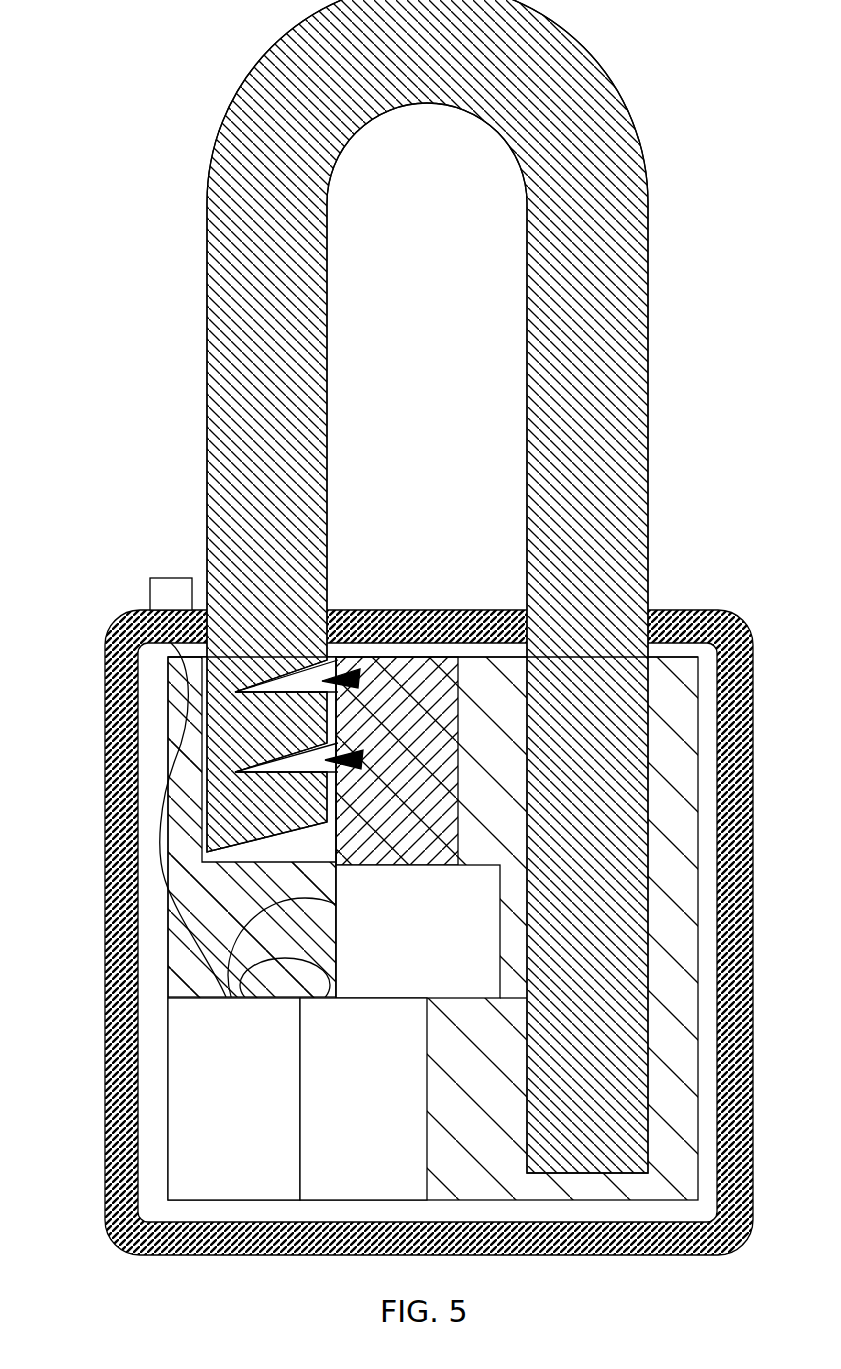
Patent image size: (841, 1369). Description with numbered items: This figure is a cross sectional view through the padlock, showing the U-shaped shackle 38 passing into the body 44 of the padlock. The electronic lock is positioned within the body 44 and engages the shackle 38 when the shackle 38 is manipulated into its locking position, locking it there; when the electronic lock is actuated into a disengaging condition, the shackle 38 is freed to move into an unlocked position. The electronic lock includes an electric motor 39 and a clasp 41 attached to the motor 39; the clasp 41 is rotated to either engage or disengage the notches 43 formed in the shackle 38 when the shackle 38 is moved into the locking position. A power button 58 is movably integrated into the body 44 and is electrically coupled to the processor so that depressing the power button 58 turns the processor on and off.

The shackle 38 is at (262, 60).
The body 44 is at (105, 676).
The power button 58 is at (172, 580).
The notches 43 is at (358, 678).
The clasp 41 is at (439, 770).
The electric motor 39 is at (460, 955).